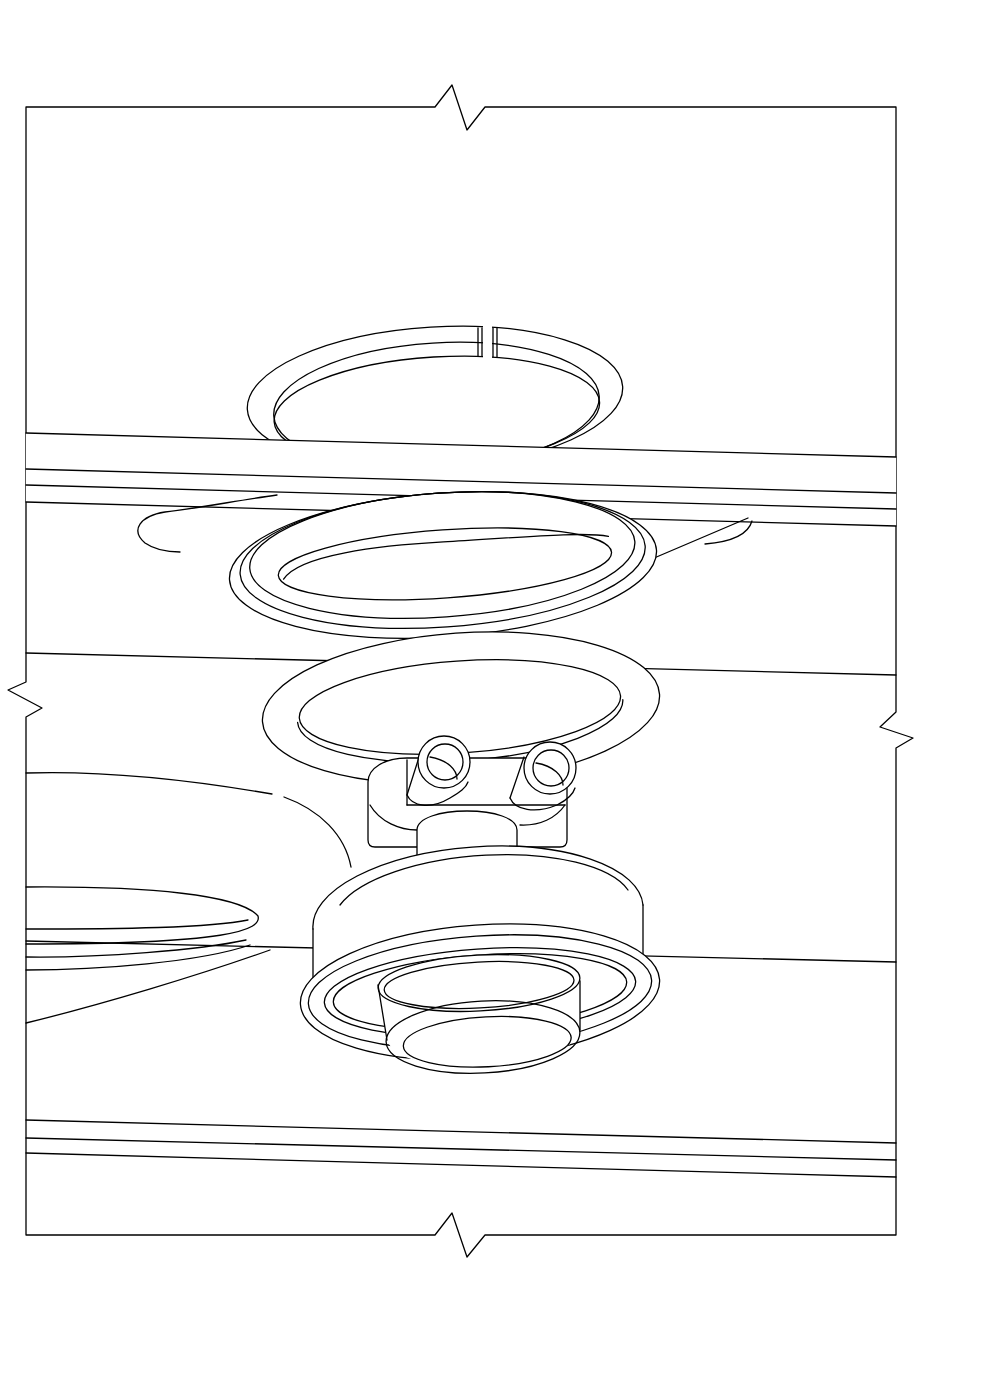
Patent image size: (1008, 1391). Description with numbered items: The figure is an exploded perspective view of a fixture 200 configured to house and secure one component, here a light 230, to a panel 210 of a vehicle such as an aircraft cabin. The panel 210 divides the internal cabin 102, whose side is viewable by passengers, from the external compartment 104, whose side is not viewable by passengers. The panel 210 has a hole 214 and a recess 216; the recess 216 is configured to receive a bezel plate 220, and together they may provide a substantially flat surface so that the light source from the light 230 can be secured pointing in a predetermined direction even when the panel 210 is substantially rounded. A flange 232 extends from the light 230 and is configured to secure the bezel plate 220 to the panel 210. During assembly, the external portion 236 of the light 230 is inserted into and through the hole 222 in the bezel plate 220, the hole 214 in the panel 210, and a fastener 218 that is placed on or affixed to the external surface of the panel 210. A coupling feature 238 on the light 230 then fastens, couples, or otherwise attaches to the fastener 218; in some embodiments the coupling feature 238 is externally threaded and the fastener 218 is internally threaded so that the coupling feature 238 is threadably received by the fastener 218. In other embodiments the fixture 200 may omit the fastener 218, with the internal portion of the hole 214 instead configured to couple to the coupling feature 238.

The fixture 200 is at (130, 78).
The external compartment 104 is at (676, 226).
The fastener 218 is at (393, 343).
The hole 214 is at (471, 506).
The recess 216 is at (625, 537).
The panel 210 is at (770, 726).
The bezel plate 220 is at (478, 747).
The hole 222 is at (588, 710).
The external portion 236 is at (355, 893).
The coupling feature 238 is at (452, 1033).
The light 230 is at (503, 1010).
The flange 232 is at (650, 977).
The internal cabin 102 is at (182, 1200).